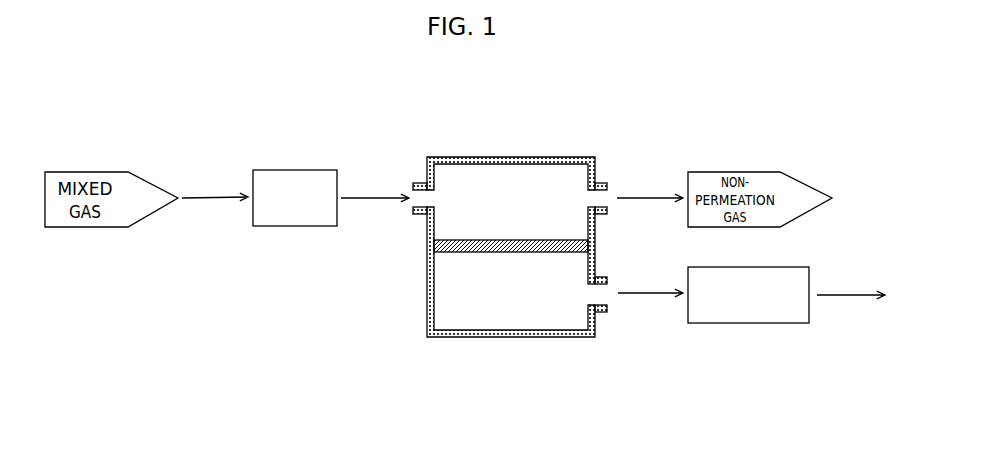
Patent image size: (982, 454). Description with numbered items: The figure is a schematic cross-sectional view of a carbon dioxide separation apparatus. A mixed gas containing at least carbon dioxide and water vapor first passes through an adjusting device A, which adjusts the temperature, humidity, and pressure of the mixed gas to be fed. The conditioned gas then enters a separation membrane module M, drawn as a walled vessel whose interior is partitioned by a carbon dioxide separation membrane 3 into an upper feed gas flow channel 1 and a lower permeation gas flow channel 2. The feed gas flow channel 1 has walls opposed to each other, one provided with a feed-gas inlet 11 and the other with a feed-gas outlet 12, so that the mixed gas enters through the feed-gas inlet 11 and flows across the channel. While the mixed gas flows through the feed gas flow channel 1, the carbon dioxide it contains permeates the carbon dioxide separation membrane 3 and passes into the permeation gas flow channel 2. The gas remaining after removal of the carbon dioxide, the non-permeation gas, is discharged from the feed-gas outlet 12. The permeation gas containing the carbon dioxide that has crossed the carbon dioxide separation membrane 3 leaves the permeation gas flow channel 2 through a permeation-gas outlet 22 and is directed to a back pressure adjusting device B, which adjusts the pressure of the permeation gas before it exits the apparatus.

The feed gas flow channel 1 is at (484, 184).
The permeation gas flow channel 2 is at (493, 312).
The carbon dioxide separation membrane 3 is at (533, 240).
The feed-gas inlet 11 is at (401, 186).
The feed-gas outlet 12 is at (621, 183).
The permeation-gas outlet 22 is at (626, 302).
The separation membrane module M is at (594, 131).
The adjusting device A is at (292, 170).
The back pressure adjusting device B is at (752, 323).